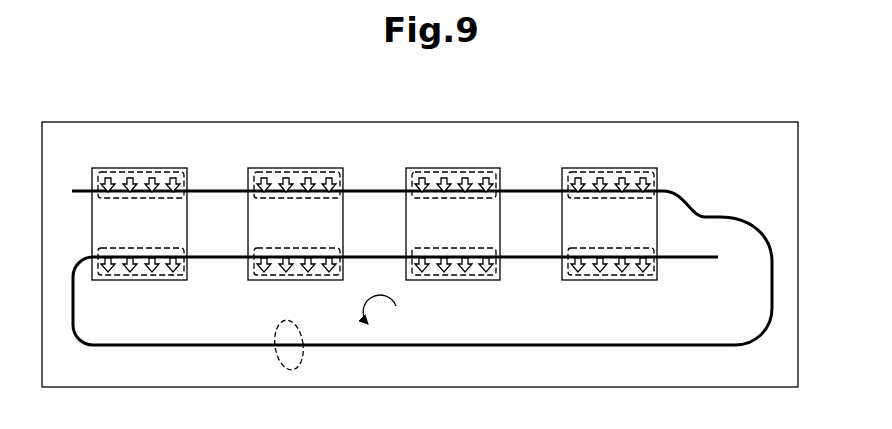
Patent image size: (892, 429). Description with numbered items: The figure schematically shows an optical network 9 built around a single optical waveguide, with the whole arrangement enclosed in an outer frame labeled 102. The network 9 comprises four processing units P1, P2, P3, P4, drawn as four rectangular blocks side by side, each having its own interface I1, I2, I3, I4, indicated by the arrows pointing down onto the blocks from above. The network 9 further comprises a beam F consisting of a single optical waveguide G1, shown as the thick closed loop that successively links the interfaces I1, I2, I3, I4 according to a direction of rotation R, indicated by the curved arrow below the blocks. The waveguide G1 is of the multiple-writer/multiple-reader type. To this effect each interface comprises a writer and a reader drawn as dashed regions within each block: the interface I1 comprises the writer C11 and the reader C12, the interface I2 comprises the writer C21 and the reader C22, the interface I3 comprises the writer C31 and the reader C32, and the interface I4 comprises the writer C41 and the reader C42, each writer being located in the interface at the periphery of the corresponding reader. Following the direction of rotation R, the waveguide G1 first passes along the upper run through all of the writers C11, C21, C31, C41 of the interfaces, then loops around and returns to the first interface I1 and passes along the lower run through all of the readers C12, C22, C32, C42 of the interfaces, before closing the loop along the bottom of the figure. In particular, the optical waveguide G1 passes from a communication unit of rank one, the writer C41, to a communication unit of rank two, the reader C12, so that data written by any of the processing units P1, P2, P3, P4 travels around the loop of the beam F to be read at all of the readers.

The optical network 9 is at (753, 145).
The housing 102 is at (786, 376).
The optical waveguide G1 is at (84, 190).
The processing unit P1 is at (116, 221).
The processing unit P2 is at (265, 221).
The processing unit P3 is at (420, 219).
The processing unit P4 is at (576, 218).
The writer C11 is at (187, 178).
The reader C12 is at (189, 271).
The writer C21 is at (343, 178).
The reader C22 is at (348, 268).
The writer C31 is at (500, 178).
The reader C32 is at (501, 264).
The writer C41 is at (657, 176).
The reader C42 is at (658, 267).
The interface I1 is at (139, 162).
The interface I2 is at (296, 162).
The interface I3 is at (453, 162).
The interface I4 is at (608, 162).
The beam F is at (300, 321).
The direction of rotation R is at (391, 315).